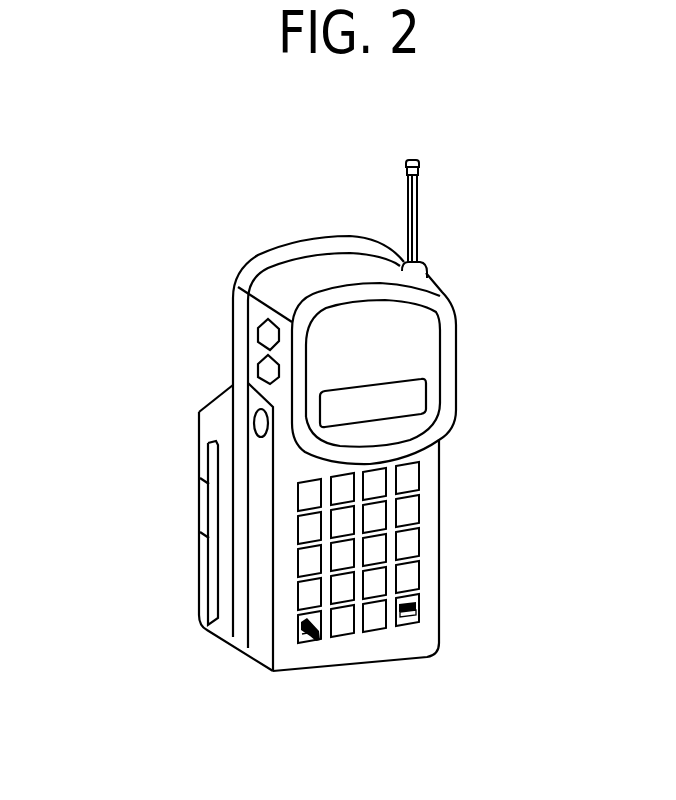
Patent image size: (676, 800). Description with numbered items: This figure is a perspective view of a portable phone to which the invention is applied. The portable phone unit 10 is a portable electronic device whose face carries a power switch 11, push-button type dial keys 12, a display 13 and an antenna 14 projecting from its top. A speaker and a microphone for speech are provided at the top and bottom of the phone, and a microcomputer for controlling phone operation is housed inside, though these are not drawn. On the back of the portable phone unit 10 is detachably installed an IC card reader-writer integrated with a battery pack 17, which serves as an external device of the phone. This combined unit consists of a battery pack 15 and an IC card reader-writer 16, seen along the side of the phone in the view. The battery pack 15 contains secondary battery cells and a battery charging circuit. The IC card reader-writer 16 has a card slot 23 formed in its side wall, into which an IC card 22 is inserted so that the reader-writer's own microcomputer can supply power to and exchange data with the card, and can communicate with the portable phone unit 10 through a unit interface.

The portable phone unit 10 is at (325, 216).
The power switch 11 is at (420, 478).
The push-button type dial keys 12 is at (385, 522).
The display 13 is at (418, 398).
The antenna 14 is at (418, 208).
The battery pack 15 is at (223, 403).
The IC card reader-writer 16 is at (198, 573).
The IC card reader-writer integrated with a battery pack 17 is at (190, 405).
The IC card 22 is at (213, 518).
The card slot 23 is at (212, 450).